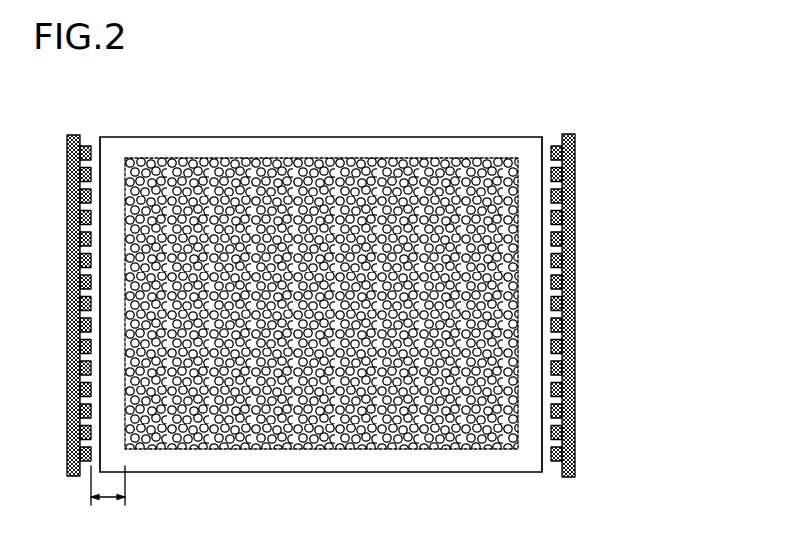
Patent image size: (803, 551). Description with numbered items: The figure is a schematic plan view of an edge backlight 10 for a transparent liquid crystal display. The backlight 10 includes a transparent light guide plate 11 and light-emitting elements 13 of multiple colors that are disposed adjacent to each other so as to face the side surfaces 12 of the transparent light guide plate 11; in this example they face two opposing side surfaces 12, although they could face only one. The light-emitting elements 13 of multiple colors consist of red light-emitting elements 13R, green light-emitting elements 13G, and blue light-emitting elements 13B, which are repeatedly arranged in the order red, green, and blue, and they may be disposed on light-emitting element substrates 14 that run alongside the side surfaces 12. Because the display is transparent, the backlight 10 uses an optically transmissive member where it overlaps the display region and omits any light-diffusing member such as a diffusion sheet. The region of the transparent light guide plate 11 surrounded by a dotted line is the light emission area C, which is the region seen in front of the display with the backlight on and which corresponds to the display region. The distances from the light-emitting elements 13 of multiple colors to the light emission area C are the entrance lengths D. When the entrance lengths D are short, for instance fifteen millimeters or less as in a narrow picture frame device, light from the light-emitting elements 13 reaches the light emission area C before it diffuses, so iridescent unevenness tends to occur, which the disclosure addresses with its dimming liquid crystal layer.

The backlight 10 is at (606, 130).
The transparent light guide plate 11 is at (378, 150).
The side surfaces 12 is at (100, 242).
The light-emitting elements of multiple colors 13 is at (390, 312).
The blue light-emitting elements 13B is at (562, 411).
The green light-emitting elements 13G is at (562, 435).
The red light-emitting elements 13R is at (562, 461).
The light-emitting element substrates 14 is at (72, 133).
The light emission area C is at (355, 450).
The entrance lengths D is at (108, 500).